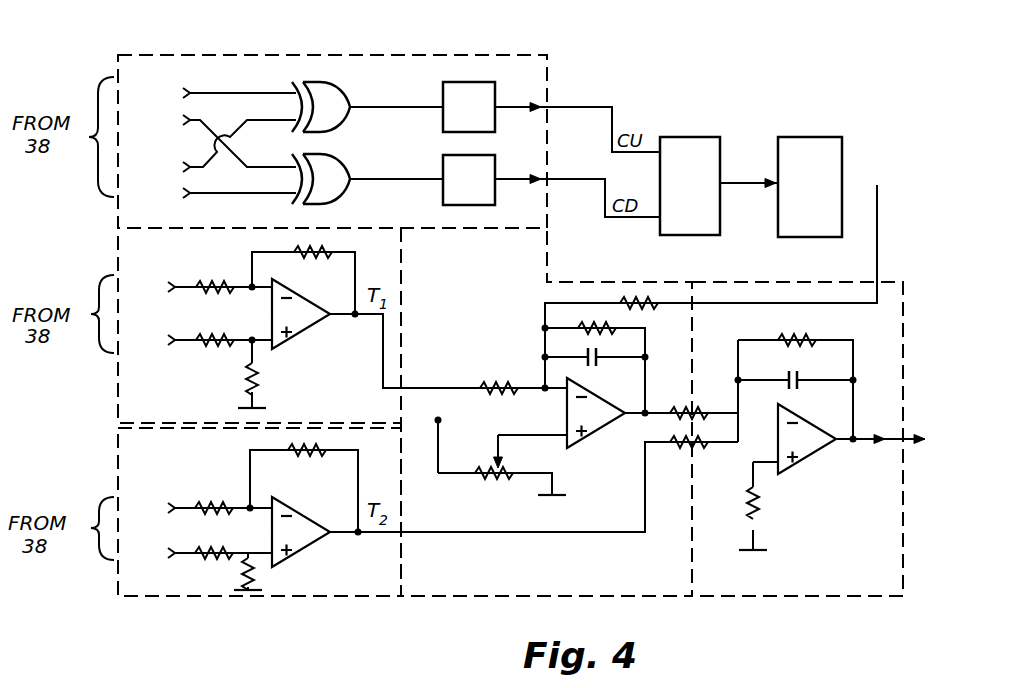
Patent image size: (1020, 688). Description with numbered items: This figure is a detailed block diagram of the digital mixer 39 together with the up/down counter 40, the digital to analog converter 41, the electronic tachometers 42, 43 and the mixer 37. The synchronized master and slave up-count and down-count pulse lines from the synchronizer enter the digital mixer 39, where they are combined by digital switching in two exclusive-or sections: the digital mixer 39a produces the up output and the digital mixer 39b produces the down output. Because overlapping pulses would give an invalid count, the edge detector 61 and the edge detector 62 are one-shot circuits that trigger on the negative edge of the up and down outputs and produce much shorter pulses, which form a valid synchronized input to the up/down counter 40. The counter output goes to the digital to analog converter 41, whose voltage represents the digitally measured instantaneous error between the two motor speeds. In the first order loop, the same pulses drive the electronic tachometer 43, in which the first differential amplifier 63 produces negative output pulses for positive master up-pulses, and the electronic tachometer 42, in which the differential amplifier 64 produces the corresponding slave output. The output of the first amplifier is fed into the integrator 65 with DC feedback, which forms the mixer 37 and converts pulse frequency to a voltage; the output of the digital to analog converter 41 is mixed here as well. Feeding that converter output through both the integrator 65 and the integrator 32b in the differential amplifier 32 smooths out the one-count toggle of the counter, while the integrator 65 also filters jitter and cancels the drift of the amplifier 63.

The digital mixer 39 is at (318, 53).
The digital mixer up section 39a is at (345, 90).
The digital mixer down section 39b is at (347, 196).
The edge detector 61 is at (469, 107).
The edge detector 62 is at (469, 180).
The up/down counter 40 is at (693, 148).
The digital to analog converter 41 is at (817, 137).
The electronic tachometer 43 is at (117, 257).
The first differential amplifier 63 is at (312, 328).
The differential amplifier 64 is at (312, 546).
The electronic tachometer 42 is at (203, 597).
The mixer 37 is at (445, 600).
The integrator 65 is at (598, 429).
The differential amplifier 32 is at (795, 600).
The integrator 32b is at (813, 457).